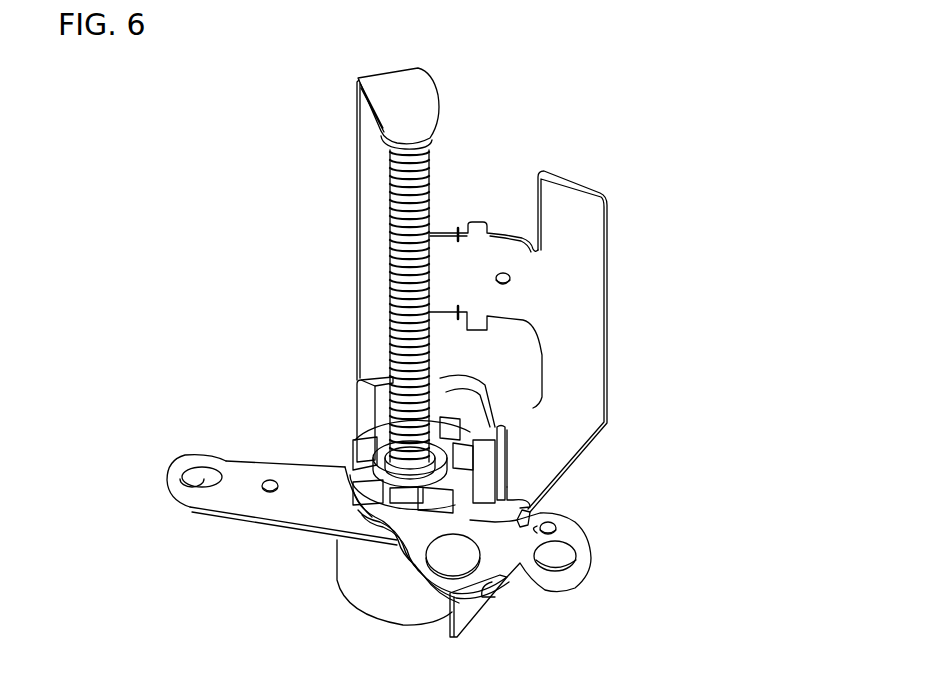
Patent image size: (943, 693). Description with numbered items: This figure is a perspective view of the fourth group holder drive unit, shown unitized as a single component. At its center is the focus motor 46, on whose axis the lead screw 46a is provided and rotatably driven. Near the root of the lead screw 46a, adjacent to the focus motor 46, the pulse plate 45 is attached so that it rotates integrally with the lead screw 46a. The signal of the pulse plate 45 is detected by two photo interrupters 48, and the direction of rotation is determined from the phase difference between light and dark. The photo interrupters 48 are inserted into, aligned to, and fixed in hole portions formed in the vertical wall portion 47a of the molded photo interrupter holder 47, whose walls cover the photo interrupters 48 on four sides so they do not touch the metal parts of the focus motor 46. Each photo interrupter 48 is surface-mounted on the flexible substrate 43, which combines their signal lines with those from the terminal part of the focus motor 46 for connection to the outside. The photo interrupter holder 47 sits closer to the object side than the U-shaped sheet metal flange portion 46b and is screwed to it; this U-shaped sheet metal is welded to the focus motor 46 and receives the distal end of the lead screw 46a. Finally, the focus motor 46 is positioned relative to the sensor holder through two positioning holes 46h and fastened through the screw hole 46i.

The flexible substrate 43 is at (478, 600).
The pulse plate 45 is at (345, 467).
The focus motor 46 is at (337, 563).
The lead screw 46a is at (392, 185).
The U-shaped sheet metal flange portion 46b is at (305, 493).
The positioning hole 46h is at (270, 490).
The screw hole 46i is at (200, 480).
The photo interrupter holder 47 is at (493, 525).
The vertical wall portion 47a is at (382, 398).
The photo interrupter 48 is at (460, 456).